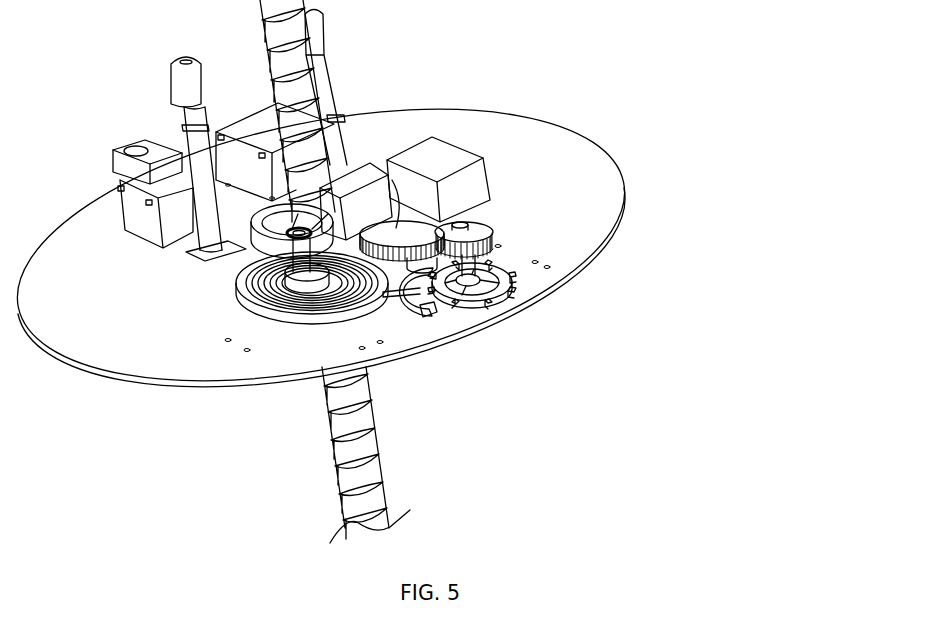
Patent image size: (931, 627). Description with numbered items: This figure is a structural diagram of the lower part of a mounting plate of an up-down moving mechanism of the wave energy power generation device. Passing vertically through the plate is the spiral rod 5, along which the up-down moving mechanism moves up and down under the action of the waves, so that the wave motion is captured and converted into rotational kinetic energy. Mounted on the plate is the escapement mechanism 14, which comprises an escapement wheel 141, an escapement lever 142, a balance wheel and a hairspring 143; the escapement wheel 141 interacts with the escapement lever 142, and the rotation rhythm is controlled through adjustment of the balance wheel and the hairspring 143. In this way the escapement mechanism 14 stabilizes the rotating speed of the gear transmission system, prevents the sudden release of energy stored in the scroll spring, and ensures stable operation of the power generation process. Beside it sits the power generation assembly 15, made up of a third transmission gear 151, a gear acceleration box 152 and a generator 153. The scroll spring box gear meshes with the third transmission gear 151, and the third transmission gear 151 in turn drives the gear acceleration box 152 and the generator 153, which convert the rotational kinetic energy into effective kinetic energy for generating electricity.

The spiral rod 5 is at (318, 108).
The escapement mechanism 14 is at (620, 345).
The escapement wheel 141 is at (470, 302).
The escapement lever 142 is at (420, 313).
The hairspring 143 is at (333, 300).
The power generation assembly 15 is at (735, 35).
The third transmission gear 151 is at (493, 239).
The gear acceleration box 152 is at (473, 190).
The generator 153 is at (403, 160).